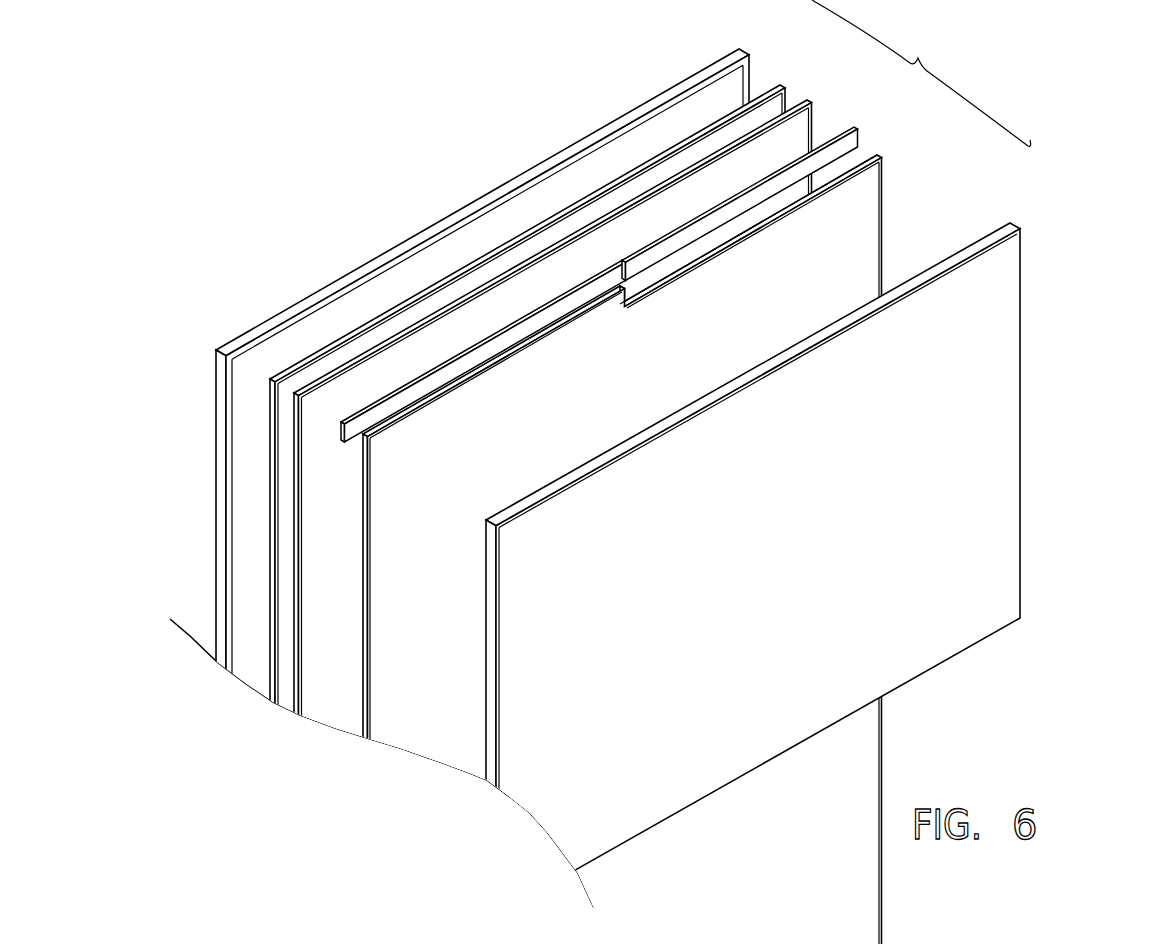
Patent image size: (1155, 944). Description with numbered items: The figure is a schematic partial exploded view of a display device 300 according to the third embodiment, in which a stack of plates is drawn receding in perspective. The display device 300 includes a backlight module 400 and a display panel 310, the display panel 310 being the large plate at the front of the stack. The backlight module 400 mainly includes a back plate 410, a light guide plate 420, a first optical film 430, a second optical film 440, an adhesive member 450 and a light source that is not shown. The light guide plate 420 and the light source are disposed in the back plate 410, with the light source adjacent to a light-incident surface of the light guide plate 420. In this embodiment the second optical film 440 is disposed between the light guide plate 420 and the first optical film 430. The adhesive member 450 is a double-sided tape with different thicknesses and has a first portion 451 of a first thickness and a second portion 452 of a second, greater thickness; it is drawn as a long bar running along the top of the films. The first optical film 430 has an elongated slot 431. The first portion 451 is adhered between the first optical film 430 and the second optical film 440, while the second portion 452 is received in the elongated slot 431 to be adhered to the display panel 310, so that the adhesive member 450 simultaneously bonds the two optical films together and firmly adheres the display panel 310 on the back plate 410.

The display device 300 is at (212, 173).
The display panel 310 is at (990, 432).
The backlight module 400 is at (921, 73).
The back plate 410 is at (748, 52).
The light guide plate 420 is at (789, 90).
The first optical film 430 is at (867, 210).
The elongated slot 431 is at (740, 218).
The second optical film 440 is at (800, 127).
The adhesive member 450 is at (845, 147).
The first portion 451 is at (464, 360).
The second portion 452 is at (660, 255).